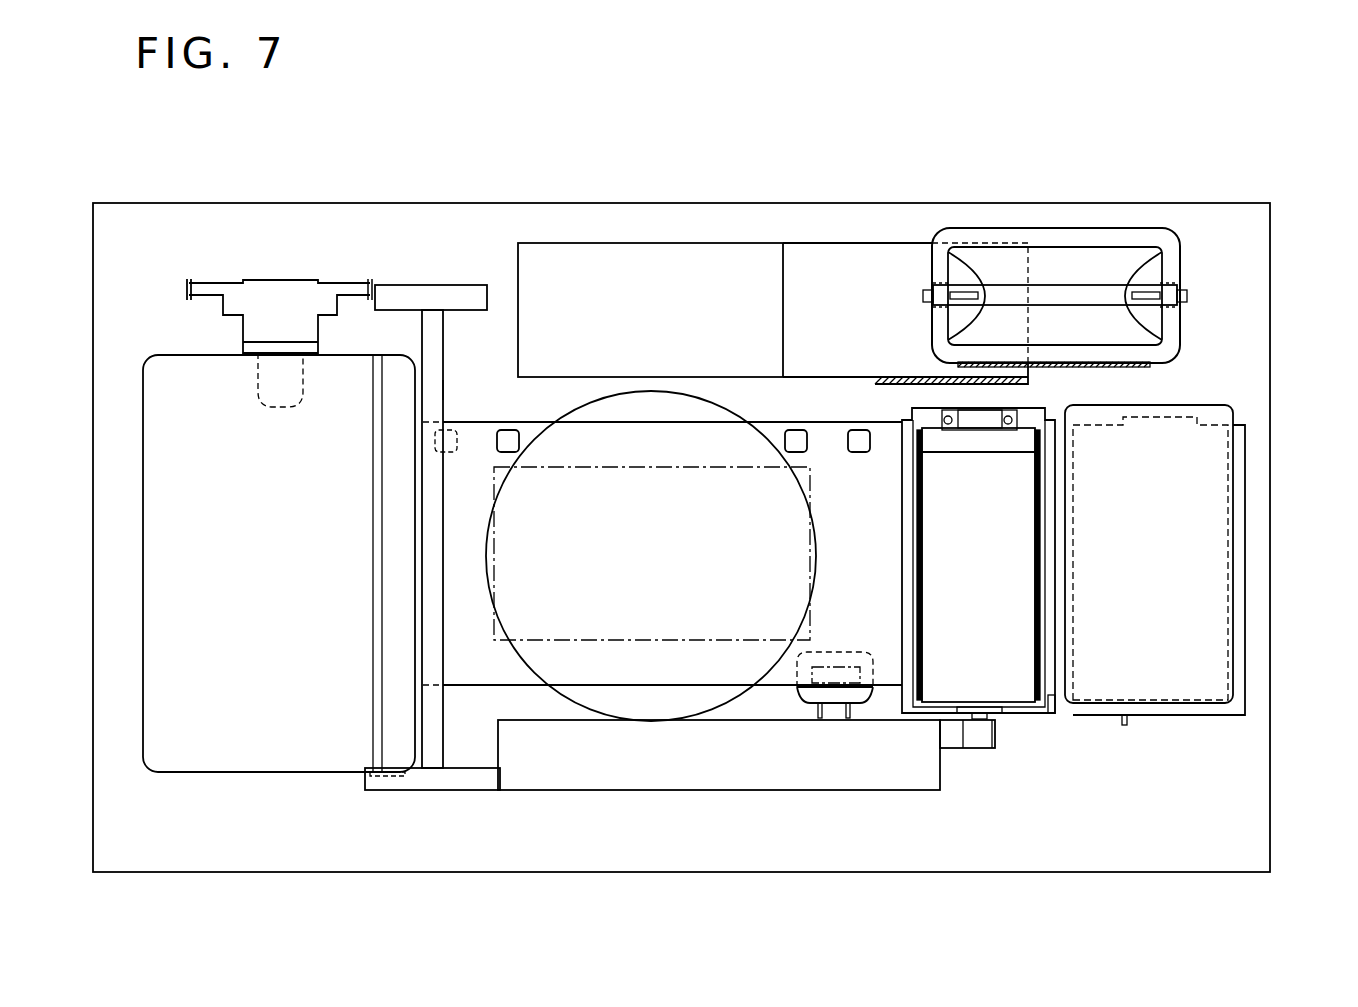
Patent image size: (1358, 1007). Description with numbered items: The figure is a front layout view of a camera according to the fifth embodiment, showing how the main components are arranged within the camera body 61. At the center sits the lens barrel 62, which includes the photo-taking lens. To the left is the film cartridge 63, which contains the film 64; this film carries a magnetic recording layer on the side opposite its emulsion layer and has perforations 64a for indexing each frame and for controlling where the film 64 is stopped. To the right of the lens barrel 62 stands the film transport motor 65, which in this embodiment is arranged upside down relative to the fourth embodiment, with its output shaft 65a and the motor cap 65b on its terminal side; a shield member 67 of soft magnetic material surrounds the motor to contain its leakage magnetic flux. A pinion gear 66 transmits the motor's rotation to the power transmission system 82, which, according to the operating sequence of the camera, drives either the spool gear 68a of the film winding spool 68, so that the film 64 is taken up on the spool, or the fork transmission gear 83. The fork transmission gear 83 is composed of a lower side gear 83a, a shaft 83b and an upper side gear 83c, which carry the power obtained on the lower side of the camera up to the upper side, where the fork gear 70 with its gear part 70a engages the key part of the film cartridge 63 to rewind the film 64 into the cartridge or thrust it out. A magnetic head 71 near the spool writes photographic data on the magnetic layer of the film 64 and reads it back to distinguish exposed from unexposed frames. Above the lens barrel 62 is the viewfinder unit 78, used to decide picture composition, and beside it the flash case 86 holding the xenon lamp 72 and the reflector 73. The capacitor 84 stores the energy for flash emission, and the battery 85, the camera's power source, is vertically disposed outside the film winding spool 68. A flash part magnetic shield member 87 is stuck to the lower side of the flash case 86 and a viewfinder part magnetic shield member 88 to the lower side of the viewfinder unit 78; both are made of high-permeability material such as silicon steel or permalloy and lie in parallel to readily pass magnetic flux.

The camera body 61 is at (178, 203).
The lens barrel 62 is at (567, 700).
The film cartridge 63 is at (240, 772).
The film 64 is at (473, 685).
The perforations 64a is at (458, 447).
The film transport motor 65 is at (1023, 705).
The output shaft 65a is at (985, 713).
The motor cap 65b is at (1012, 440).
The pinion gear 66 is at (978, 750).
The shield member 67 is at (1040, 630).
The film winding spool 68 is at (908, 648).
The spool gear 68a is at (1057, 705).
The fork gear 70 is at (280, 280).
The gear part 70a is at (368, 284).
The magnetic head 71 is at (855, 652).
The xenon lamp 72 is at (1082, 285).
The reflector 73 is at (1043, 247).
The viewfinder unit 78 is at (580, 243).
The power transmission system 82 is at (800, 790).
The fork transmission gear 83 is at (436, 748).
The lower side gear 83a is at (388, 790).
The shaft 83b is at (443, 390).
The upper side gear 83c is at (448, 285).
The capacitor 84 is at (1237, 410).
The battery 85 is at (1253, 500).
The flash case 86 is at (1172, 237).
The flash part magnetic shield member 87 is at (1145, 368).
The viewfinder part magnetic shield member 88 is at (880, 385).